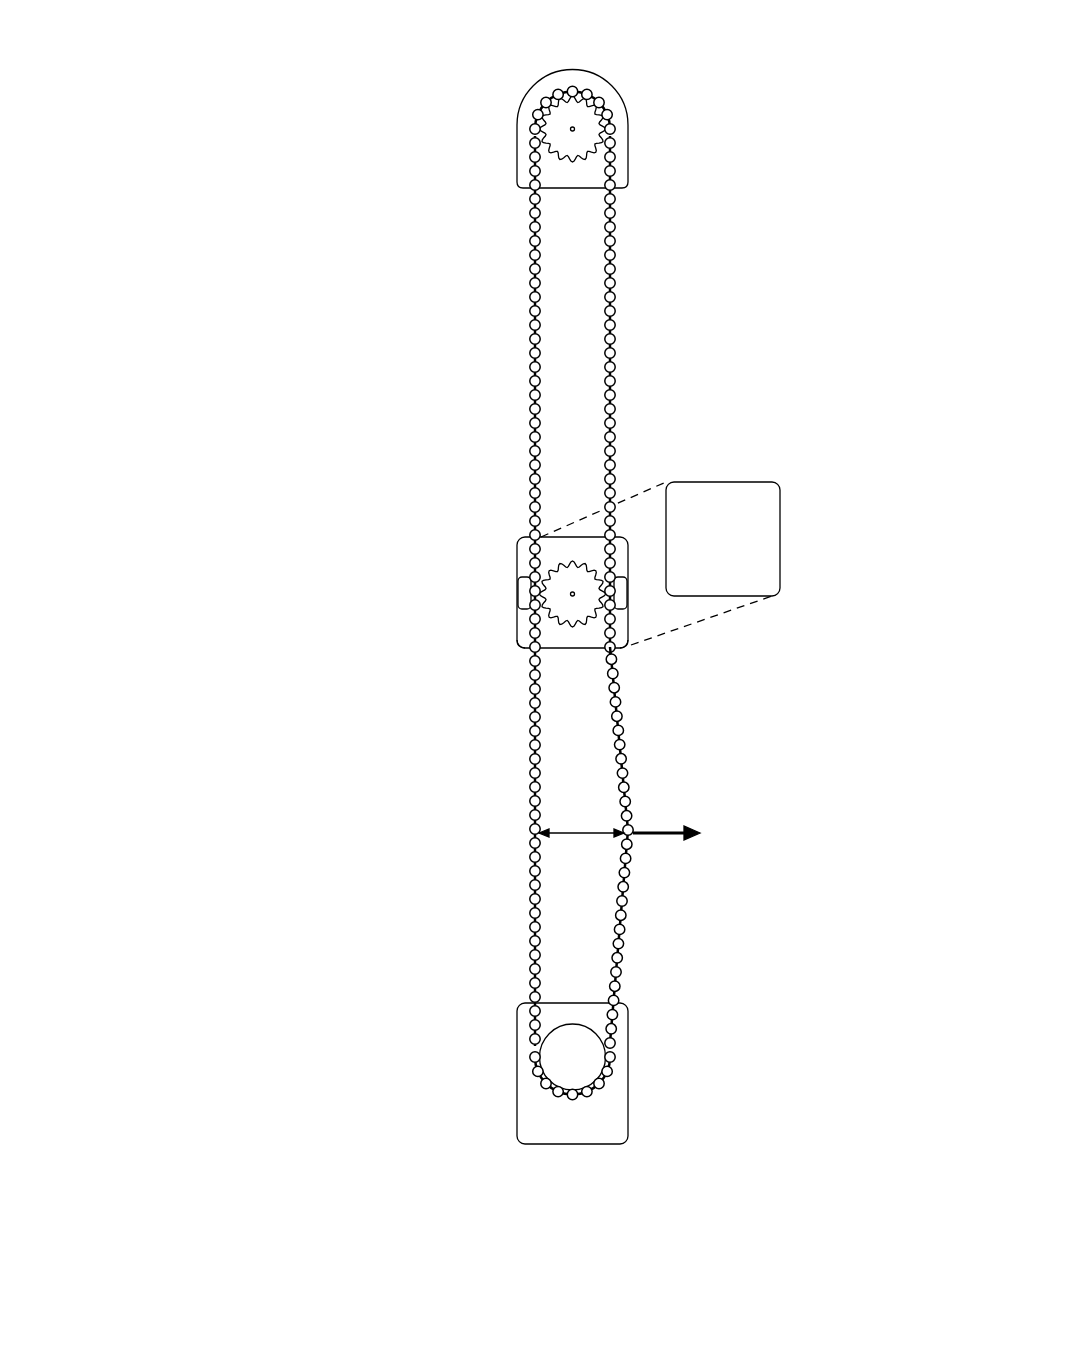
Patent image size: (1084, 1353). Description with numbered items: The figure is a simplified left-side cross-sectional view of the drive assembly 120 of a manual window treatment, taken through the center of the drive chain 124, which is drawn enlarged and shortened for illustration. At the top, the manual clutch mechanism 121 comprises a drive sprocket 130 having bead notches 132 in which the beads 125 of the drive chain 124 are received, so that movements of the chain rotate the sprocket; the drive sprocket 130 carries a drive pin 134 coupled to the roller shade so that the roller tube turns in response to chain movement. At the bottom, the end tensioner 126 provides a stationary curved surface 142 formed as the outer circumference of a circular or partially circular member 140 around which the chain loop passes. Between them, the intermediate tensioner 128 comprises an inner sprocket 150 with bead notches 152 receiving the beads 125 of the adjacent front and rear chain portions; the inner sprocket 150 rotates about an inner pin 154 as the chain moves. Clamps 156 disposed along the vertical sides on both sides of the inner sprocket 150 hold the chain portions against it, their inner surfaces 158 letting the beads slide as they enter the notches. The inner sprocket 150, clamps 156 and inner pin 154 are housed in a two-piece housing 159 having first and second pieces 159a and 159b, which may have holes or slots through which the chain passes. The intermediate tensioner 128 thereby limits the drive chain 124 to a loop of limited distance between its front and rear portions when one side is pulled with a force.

The drive assembly 120 is at (253, 88).
The manual clutch mechanism 121 is at (497, 158).
The drive chain 124 is at (625, 425).
The beads 125 is at (610, 255).
The end tensioner 126 is at (647, 1068).
The intermediate tensioner 128 is at (505, 625).
The drive sprocket 130 is at (597, 132).
The bead notches 132 is at (580, 163).
The drive pin 134 is at (571, 127).
The circular or partially circular member 140 is at (557, 1055).
The stationary curved surface 142 is at (548, 1088).
The inner sprocket 150 is at (533, 572).
The bead notches 152 is at (562, 630).
The inner pin 154 is at (573, 598).
The clamps 156 is at (618, 595).
The inner surfaces 158 is at (516, 585).
The housing 159 is at (708, 575).
The first piece 159a is at (525, 643).
The second piece 159b is at (747, 530).